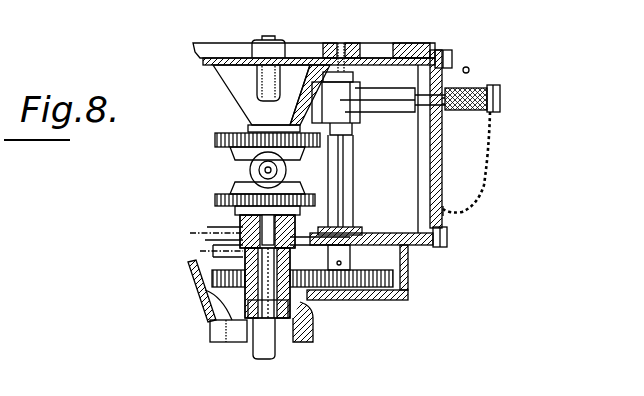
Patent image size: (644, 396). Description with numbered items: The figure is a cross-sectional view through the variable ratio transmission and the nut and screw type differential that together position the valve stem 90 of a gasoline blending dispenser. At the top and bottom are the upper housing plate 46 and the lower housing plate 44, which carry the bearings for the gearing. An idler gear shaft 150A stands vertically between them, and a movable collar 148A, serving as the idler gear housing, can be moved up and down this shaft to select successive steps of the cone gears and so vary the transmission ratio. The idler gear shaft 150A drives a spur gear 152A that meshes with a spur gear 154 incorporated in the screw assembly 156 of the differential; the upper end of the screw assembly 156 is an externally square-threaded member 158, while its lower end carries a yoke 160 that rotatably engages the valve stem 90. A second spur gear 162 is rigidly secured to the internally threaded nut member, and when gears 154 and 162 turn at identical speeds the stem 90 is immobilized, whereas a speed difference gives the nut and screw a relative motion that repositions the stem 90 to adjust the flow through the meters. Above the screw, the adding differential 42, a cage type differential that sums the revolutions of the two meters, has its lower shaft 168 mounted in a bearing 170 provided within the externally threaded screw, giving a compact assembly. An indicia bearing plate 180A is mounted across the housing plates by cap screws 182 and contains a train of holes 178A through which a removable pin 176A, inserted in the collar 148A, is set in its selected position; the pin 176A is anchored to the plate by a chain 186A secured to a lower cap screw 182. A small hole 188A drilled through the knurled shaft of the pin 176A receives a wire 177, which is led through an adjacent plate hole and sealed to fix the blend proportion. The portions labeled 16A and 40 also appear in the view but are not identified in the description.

The control rod 16A is at (240, 222).
The frame 40 is at (207, 312).
The adding differential 42 is at (238, 171).
The lower housing plate 44 is at (396, 246).
The upper housing plate 46 is at (229, 62).
The valve stem 90 is at (256, 352).
The movable collar 148A is at (389, 92).
The idler gear shaft 150A is at (354, 152).
The spur gear 152A is at (412, 296).
The spur gear 154 is at (194, 283).
The screw assembly 156 is at (243, 277).
The externally square-threaded member 158 is at (243, 231).
The yoke 160 is at (287, 342).
The spur gear 162 is at (316, 258).
The lower shaft of the adding differential 168 is at (305, 194).
The bearing 170 is at (292, 246).
The removable pin 176A is at (492, 92).
The wire 177 is at (451, 88).
The holes 178A is at (444, 108).
The indicia bearing plate 180A is at (437, 166).
The cap screws 182 is at (446, 76).
The chain 186A is at (484, 188).
The small hole 188A is at (472, 89).